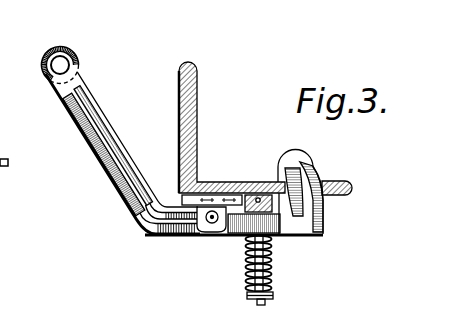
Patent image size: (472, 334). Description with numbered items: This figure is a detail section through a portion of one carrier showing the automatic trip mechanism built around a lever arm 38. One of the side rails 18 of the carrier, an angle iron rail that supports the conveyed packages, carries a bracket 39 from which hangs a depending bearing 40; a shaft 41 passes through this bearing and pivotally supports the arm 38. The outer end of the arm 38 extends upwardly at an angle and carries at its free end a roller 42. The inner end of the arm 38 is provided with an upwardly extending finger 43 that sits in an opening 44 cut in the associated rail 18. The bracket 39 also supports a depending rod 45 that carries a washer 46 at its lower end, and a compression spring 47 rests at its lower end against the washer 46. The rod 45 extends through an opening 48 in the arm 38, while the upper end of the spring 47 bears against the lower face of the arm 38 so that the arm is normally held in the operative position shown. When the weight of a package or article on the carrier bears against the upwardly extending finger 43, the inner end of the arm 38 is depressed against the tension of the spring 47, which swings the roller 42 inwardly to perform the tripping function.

The angle iron rail 18 is at (197, 78).
The lever arm 38 is at (137, 178).
The bracket 39 is at (237, 182).
The depending bearing 40 is at (212, 225).
The shaft 41 is at (198, 226).
The roller 42 is at (78, 59).
The upwardly extending finger 43 is at (289, 156).
The opening 44 is at (327, 180).
The depending rod 45 is at (262, 305).
The washer 46 is at (251, 294).
The compression spring 47 is at (274, 282).
The opening 48 is at (287, 238).